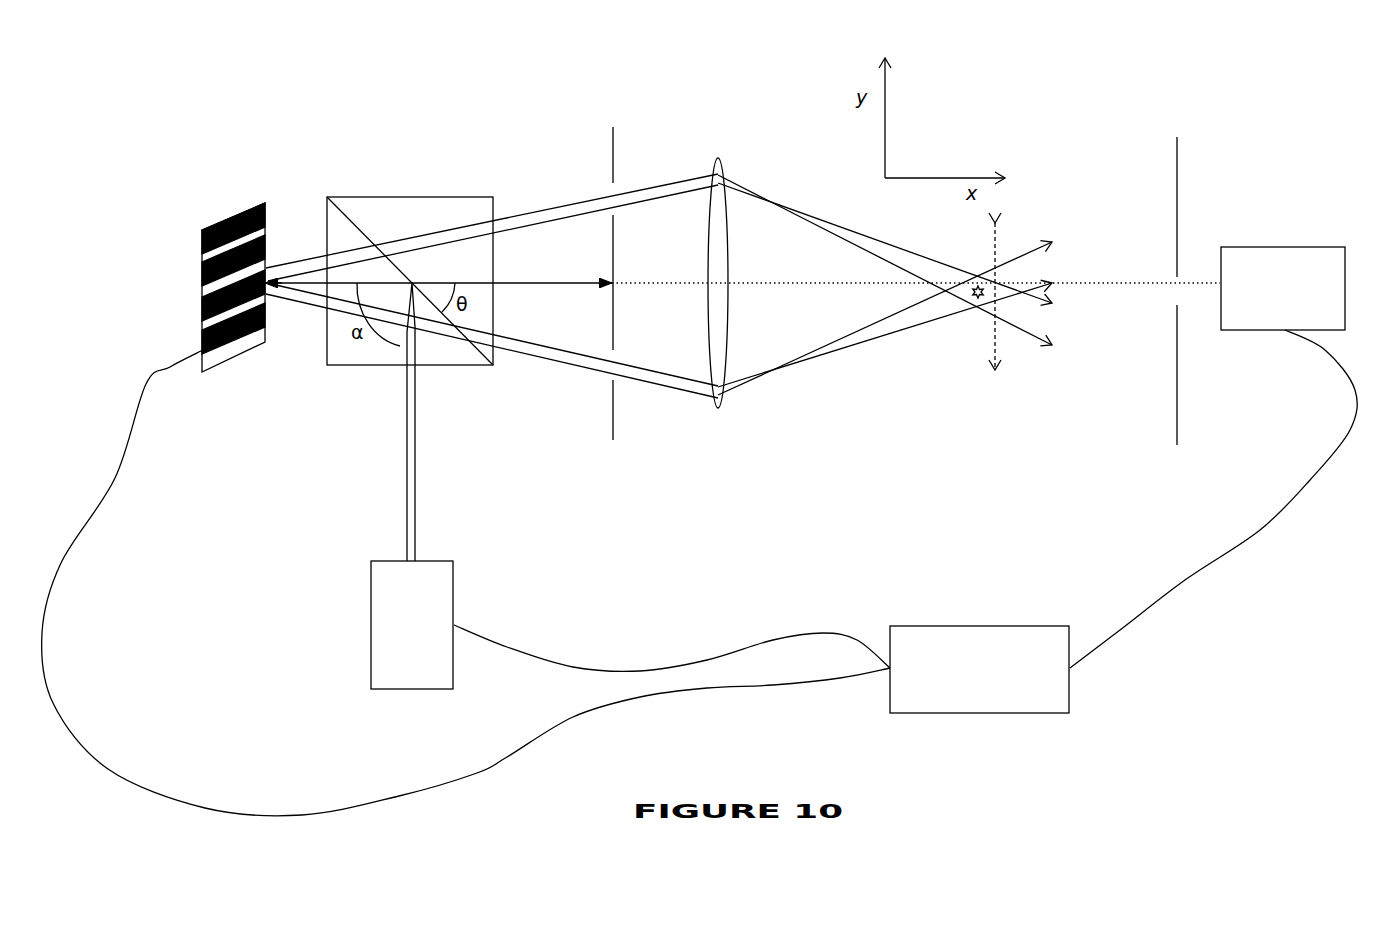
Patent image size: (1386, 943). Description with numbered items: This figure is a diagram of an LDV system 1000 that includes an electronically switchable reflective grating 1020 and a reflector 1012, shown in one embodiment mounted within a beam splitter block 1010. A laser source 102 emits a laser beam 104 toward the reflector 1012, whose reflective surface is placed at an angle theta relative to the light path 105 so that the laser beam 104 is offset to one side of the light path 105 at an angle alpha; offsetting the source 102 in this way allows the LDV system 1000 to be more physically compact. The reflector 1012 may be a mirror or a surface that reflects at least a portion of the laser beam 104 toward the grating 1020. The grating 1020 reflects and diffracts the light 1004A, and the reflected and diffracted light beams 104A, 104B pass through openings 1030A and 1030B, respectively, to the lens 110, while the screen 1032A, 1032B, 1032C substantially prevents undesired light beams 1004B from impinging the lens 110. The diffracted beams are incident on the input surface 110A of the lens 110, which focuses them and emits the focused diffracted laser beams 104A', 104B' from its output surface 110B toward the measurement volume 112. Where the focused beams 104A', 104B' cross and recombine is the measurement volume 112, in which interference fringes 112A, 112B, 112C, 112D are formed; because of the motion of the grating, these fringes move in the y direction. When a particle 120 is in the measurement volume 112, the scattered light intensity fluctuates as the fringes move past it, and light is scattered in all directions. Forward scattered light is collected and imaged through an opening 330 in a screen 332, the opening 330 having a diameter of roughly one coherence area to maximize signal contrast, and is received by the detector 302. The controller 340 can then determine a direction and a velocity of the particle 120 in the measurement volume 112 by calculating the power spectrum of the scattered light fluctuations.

The LDV system 1000 is at (486, 86).
The electronically switchable reflective grating 1020 is at (232, 218).
The beam splitter 1010 is at (400, 367).
The reflector 1012 is at (360, 230).
The light 1004A is at (280, 290).
The undesired light beams 1004B is at (512, 282).
The light path 105 is at (748, 282).
The laser beam 104 is at (410, 501).
The laser source 102 is at (368, 604).
The first order diffracted laser beam 104A is at (492, 209).
The first order diffracted laser beam 104B is at (492, 350).
The screen 1032A is at (612, 142).
The screen 1032B is at (617, 268).
The screen 1032C is at (612, 437).
The opening 1030A is at (617, 192).
The opening 1030B is at (617, 378).
The lens 110 is at (721, 410).
The input surface 110A is at (707, 301).
The output surface 110B is at (731, 303).
The focused diffracted laser beam 104A' is at (885, 248).
The focused diffracted laser beam 104B' is at (885, 328).
The measurement volume 112 is at (967, 283).
The fringe 112A is at (953, 287).
The fringe 112B is at (1005, 282).
The fringe 112C is at (1005, 297).
The fringe 112D is at (957, 297).
The particle 120 is at (977, 283).
The screen 332 is at (1175, 177).
The opening 330 is at (1182, 300).
The detector 302 is at (1305, 247).
The controller 340 is at (1070, 692).